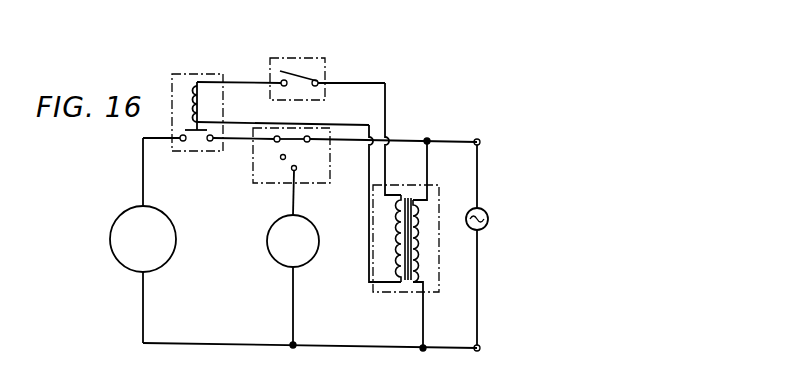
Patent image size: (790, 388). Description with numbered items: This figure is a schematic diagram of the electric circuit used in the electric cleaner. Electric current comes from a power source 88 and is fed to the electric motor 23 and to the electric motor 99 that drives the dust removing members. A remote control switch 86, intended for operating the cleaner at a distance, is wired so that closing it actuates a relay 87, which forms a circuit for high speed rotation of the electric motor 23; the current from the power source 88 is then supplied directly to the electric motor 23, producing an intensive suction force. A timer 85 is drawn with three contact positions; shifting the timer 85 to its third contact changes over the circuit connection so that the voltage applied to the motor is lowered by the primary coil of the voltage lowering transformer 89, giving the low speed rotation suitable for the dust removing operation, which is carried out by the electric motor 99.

The relay 87 is at (212, 73).
The remote control switch 86 is at (326, 68).
The timer 85 is at (315, 186).
The power source 88 is at (489, 213).
The transformer 89 is at (440, 260).
The electric motor 23 is at (125, 268).
The electric motor 99 is at (313, 260).